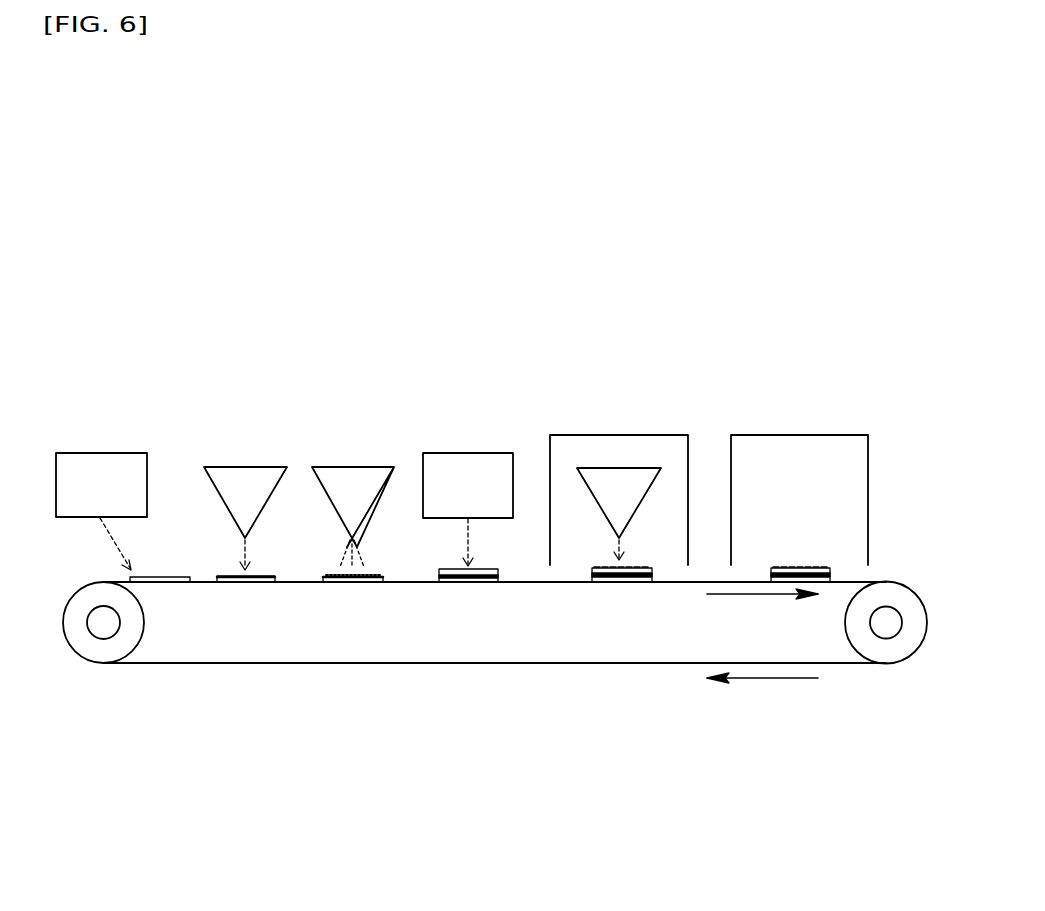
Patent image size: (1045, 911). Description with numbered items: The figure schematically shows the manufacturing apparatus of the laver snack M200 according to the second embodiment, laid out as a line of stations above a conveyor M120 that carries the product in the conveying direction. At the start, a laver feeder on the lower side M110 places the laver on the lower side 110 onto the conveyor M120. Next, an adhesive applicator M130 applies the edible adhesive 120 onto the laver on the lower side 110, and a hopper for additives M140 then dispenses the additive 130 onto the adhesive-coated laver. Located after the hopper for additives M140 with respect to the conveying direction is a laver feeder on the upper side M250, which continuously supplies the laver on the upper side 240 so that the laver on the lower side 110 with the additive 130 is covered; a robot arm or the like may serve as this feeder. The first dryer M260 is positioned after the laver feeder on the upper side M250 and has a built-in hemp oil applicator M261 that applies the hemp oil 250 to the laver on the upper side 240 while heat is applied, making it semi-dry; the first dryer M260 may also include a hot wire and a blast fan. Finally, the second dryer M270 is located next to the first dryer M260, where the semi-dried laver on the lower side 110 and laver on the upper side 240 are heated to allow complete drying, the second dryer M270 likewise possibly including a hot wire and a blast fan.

The manufacturing apparatus of the laver snack M200 is at (490, 277).
The laver feeder on the lower side M110 is at (99, 475).
The conveyor M120 is at (247, 663).
The adhesive applicator M130 is at (242, 483).
The hopper for additives M140 is at (345, 483).
The laver feeder on the upper side M250 is at (480, 475).
The first dryer M260 is at (635, 435).
The hemp oil applicator M261 is at (595, 478).
The second dryer M270 is at (800, 435).
The laver on the lower side 110 is at (168, 579).
The edible adhesive 120 is at (272, 580).
The additive 130 is at (380, 568).
The laver on the upper side 240 is at (493, 568).
The hemp oil 250 is at (643, 568).